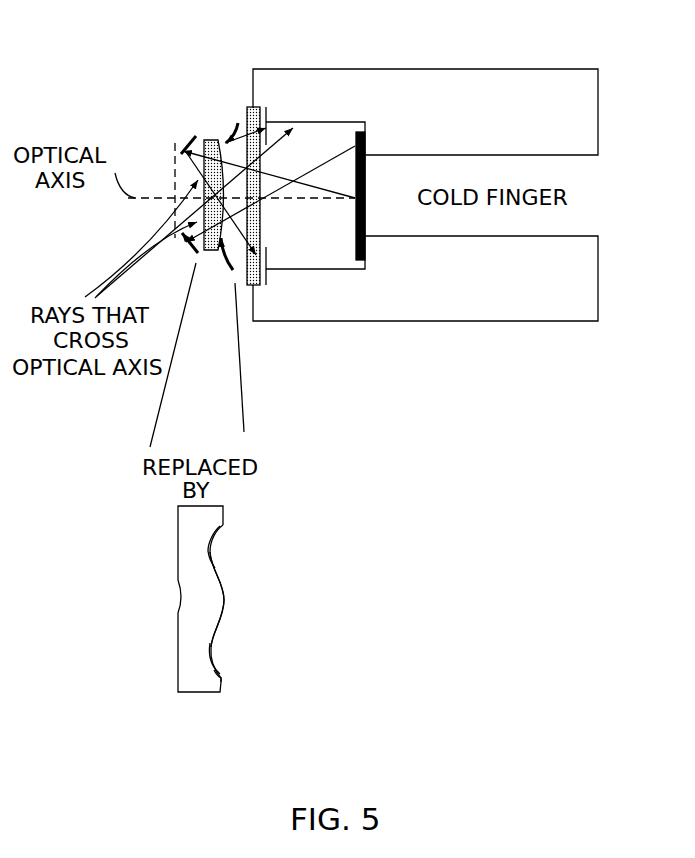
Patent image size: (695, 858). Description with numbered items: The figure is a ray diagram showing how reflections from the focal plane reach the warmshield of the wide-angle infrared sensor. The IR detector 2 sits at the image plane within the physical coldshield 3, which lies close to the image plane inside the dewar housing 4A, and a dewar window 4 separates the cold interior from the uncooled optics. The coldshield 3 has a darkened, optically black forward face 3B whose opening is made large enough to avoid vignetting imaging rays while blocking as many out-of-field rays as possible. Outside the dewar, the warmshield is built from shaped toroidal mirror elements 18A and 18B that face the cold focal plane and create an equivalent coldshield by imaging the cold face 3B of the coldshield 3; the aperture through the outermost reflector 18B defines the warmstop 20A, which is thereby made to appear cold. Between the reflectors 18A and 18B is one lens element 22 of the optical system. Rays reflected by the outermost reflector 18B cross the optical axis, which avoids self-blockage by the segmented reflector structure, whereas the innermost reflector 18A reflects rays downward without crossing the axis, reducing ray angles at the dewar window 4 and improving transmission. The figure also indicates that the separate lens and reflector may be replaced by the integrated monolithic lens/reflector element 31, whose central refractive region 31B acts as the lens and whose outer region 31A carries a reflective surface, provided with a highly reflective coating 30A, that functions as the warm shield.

The IR detector 2 is at (365, 213).
The coldshield 3 is at (343, 270).
The forward face of the coldshield 3B is at (265, 272).
The dewar window 4 is at (245, 110).
The dewar housing 4A is at (442, 68).
The innermost reflector 18A is at (228, 266).
The outermost reflector 18B is at (182, 256).
The warmstop 20A is at (173, 210).
The lens element 22 is at (208, 139).
The reflective coating 30A is at (223, 672).
The lens/reflector element 31 is at (197, 693).
The outer region 31A is at (218, 545).
The central refractive region 31B is at (218, 625).